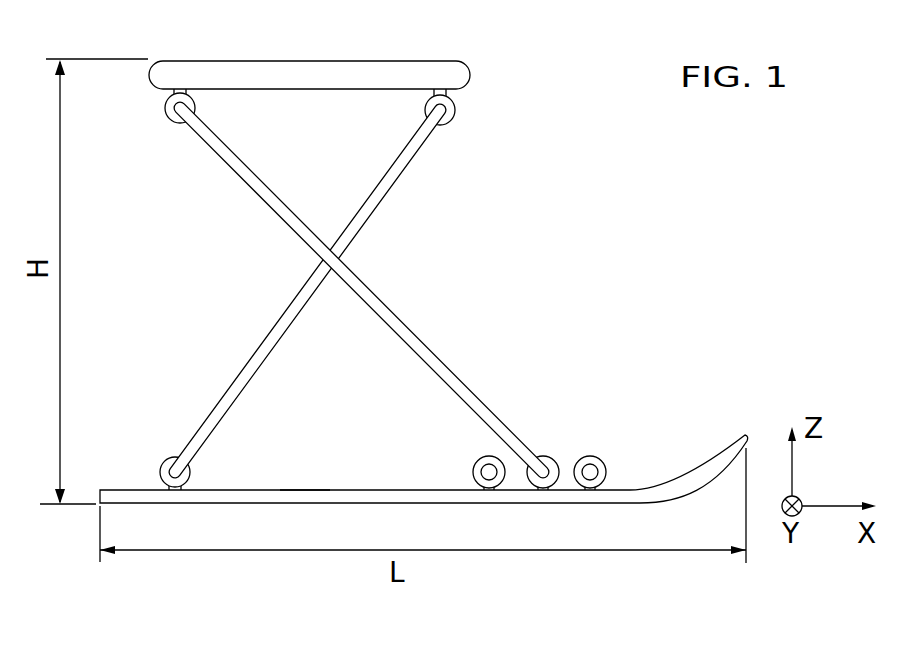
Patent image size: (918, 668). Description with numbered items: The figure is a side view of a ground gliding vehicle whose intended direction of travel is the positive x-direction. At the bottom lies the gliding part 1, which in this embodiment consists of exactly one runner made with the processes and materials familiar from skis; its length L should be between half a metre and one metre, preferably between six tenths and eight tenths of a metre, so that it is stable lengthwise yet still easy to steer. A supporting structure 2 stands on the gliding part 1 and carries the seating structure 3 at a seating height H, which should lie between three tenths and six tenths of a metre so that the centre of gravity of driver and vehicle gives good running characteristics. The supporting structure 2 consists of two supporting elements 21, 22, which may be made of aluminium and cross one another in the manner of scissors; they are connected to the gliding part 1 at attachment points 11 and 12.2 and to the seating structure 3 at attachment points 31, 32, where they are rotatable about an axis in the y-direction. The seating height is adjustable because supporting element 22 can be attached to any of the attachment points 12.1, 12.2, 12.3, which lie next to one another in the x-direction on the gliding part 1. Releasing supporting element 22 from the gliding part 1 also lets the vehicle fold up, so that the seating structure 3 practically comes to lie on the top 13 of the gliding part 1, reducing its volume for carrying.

The gliding part 1 is at (245, 497).
The supporting structure 2 is at (359, 290).
The seating structure 3 is at (273, 78).
The attachment point 11 is at (161, 462).
The attachment point 12.1 is at (480, 457).
The attachment point 12.2 is at (555, 456).
The attachment point 12.3 is at (606, 456).
The top of the gliding part 13 is at (305, 488).
The supporting element 21 is at (387, 188).
The supporting element 22 is at (420, 347).
The attachment point 31 is at (452, 124).
The attachment point 32 is at (165, 107).